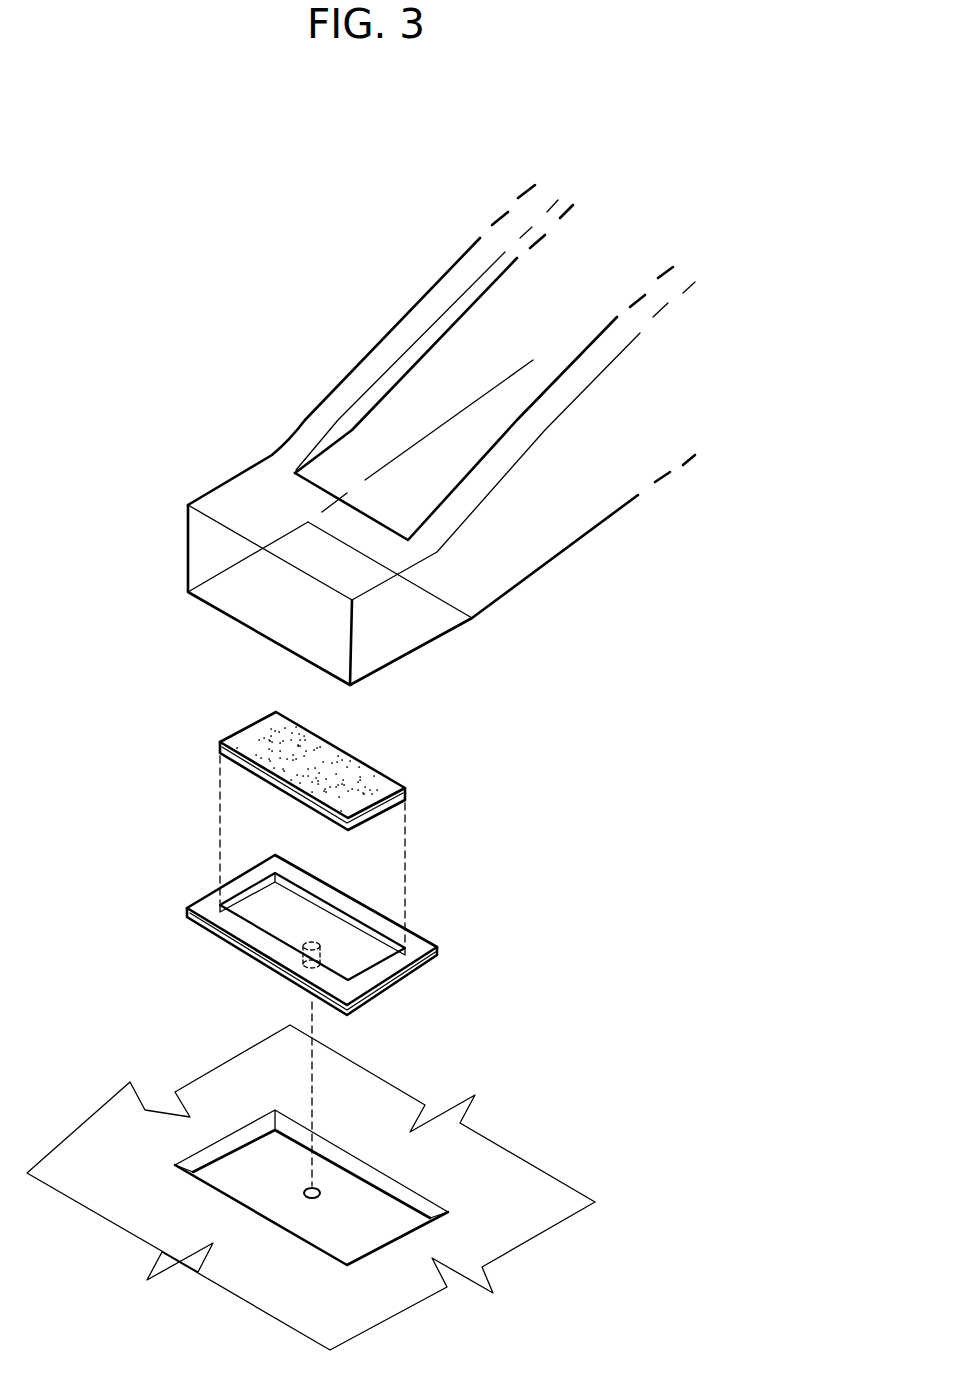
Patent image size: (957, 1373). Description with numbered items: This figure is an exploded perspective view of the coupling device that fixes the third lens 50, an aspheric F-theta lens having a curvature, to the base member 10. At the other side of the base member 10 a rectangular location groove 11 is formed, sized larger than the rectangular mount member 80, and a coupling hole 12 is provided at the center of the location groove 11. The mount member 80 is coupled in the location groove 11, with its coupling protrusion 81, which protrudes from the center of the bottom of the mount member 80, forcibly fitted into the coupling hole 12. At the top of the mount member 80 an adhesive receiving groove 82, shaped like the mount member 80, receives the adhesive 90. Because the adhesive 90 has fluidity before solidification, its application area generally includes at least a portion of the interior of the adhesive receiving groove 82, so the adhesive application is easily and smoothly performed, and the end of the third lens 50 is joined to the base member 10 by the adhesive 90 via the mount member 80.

The base member 10 is at (337, 1176).
The location groove 11 is at (374, 1232).
The coupling hole 12 is at (312, 1188).
The third lens 50 is at (243, 523).
The mount member 80 is at (342, 935).
The coupling protrusion 81 is at (307, 943).
The adhesive receiving groove 82 is at (347, 930).
The adhesive 90 is at (382, 788).